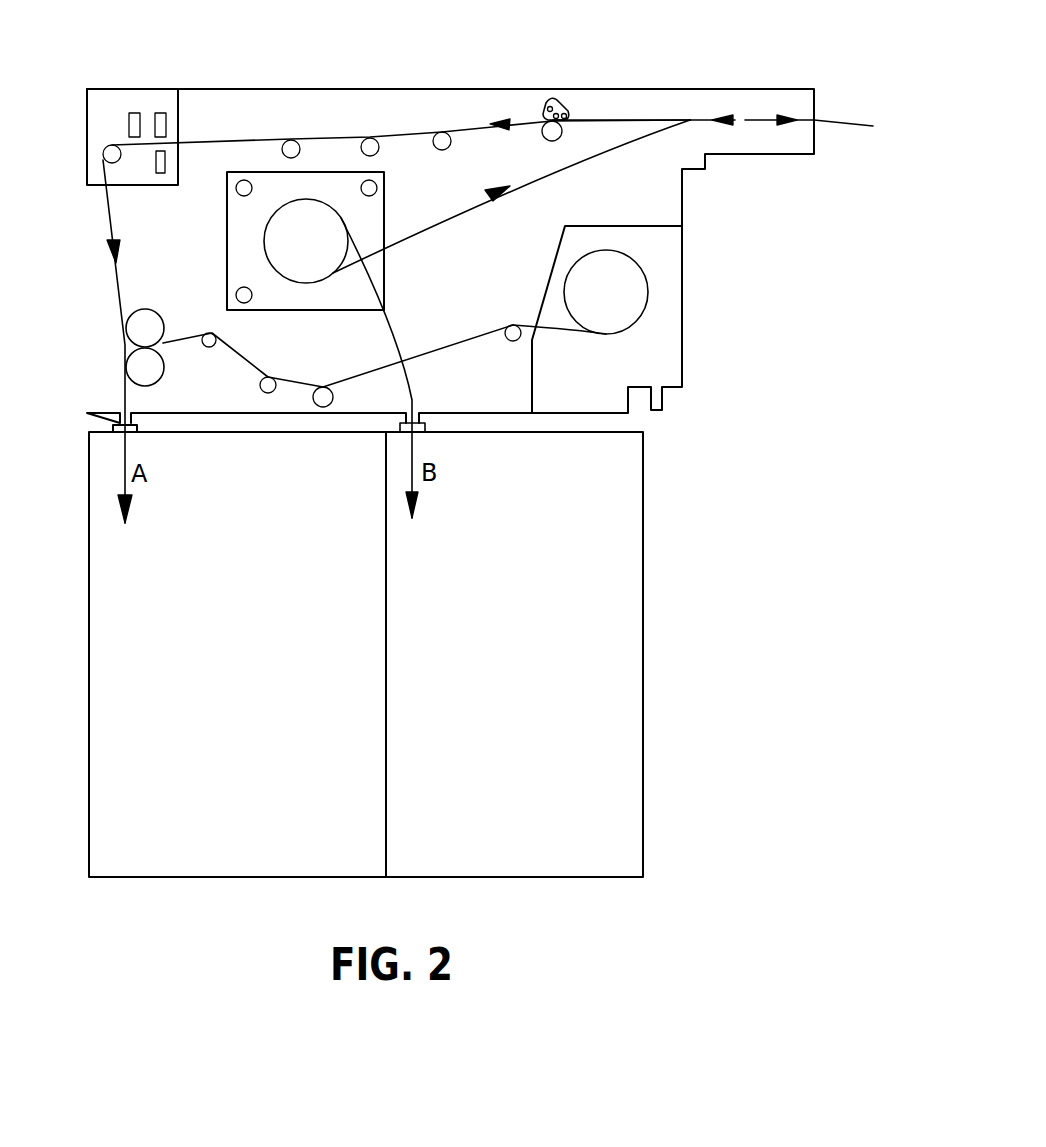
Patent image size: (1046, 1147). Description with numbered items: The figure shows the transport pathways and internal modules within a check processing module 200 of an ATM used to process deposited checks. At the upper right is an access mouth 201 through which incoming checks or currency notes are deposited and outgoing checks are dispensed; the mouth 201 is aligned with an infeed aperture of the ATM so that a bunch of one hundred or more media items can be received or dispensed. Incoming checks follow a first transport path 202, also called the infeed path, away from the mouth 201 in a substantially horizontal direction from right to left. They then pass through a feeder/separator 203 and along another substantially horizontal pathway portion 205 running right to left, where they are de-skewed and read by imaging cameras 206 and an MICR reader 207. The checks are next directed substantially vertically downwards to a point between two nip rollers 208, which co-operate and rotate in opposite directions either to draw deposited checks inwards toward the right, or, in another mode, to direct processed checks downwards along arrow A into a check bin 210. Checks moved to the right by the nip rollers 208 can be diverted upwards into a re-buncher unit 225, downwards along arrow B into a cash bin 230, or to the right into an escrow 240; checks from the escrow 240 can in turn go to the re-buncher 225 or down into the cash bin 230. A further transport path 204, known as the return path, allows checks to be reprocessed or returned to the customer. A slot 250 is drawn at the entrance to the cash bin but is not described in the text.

The check processing module 200 is at (220, 89).
The access mouth 201 is at (824, 110).
The first transport path 202 is at (625, 120).
The feeder/separator 203 is at (545, 108).
The further transport path 204 is at (597, 150).
The pathway portion 205 is at (232, 138).
The imaging cameras 206 is at (159, 112).
The MICR reader 207 is at (134, 112).
The nip rollers 208 is at (142, 315).
The check bin 210 is at (250, 689).
The re-buncher unit 225 is at (386, 207).
The cash bin 230 is at (528, 701).
The escrow 240 is at (668, 275).
The exit slot 250 is at (420, 415).